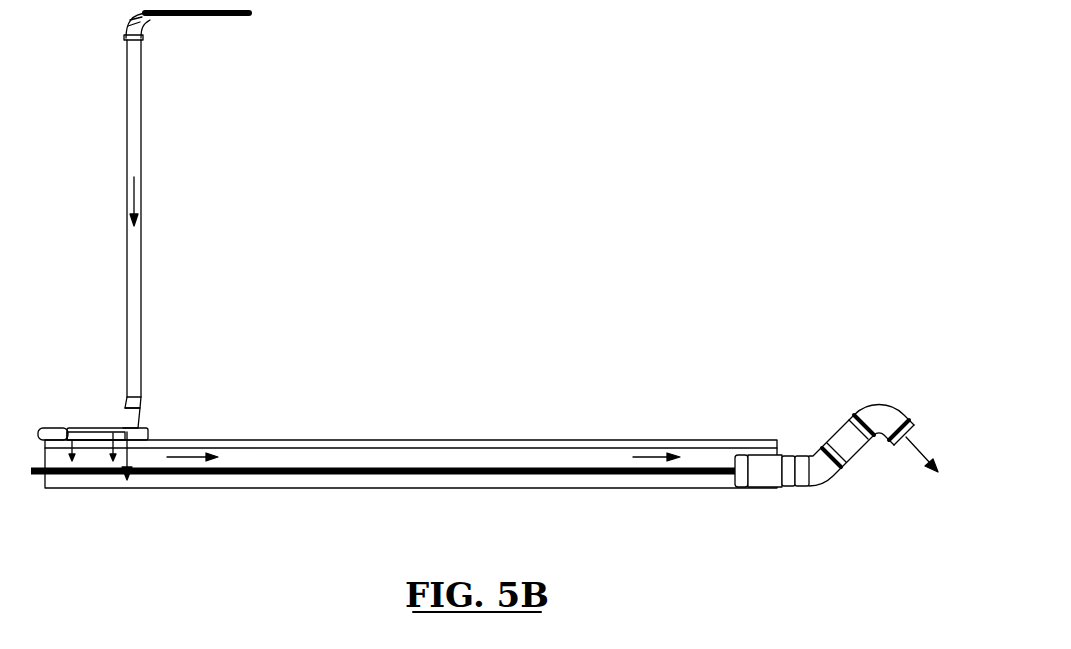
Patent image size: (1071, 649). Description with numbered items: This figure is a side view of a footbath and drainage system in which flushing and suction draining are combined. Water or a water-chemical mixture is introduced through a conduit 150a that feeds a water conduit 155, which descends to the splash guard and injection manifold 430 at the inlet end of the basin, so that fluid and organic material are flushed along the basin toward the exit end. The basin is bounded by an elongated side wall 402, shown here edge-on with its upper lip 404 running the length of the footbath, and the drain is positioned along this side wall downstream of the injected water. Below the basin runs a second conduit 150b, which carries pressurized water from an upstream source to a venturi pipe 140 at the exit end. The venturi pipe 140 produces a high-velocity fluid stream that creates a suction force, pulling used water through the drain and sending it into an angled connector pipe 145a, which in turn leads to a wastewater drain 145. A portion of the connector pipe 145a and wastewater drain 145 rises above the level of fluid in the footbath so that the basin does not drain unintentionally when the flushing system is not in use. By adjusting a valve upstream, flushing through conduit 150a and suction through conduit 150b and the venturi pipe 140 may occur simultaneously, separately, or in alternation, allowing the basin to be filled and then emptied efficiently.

The conduit 150a is at (223, 14).
The water conduit 155 is at (132, 287).
The splash guard and injection manifold 430 is at (57, 427).
The side wall 402 is at (332, 462).
The trough lip 404 is at (598, 440).
The conduit 150b is at (205, 473).
The venturi pipe 140 is at (760, 467).
The angled connector pipe 145a is at (842, 445).
The wastewater drain 145 is at (887, 415).